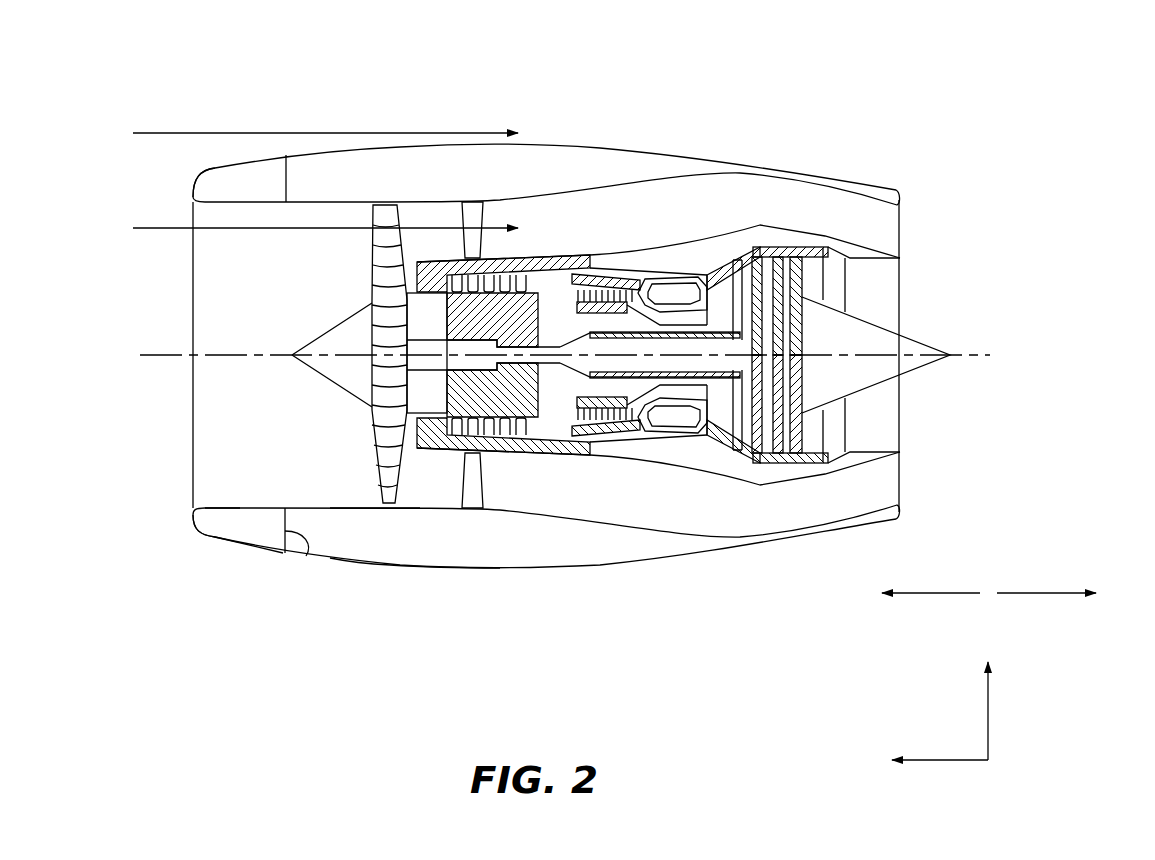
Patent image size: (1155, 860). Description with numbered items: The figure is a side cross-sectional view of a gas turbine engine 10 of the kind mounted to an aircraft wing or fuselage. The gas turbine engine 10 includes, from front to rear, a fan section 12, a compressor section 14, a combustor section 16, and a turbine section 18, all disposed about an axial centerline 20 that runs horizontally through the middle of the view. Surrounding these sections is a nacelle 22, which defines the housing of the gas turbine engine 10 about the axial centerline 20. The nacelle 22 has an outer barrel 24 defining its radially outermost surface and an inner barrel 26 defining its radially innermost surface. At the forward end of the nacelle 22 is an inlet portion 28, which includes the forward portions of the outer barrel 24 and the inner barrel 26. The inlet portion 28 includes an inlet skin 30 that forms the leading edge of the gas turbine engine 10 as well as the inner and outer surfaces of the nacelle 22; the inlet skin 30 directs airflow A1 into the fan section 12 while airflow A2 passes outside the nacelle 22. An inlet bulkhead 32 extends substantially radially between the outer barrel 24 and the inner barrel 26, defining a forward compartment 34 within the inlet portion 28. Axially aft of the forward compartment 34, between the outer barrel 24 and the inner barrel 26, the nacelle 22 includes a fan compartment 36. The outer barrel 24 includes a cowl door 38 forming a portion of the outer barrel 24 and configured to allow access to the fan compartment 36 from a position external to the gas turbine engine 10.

The gas turbine engine 10 is at (910, 138).
The fan section 12 is at (413, 120).
The compressor section 14 is at (413, 120).
The combustor section 16 is at (623, 120).
The turbine section 18 is at (700, 120).
The axial centerline 20 is at (965, 375).
The nacelle 22 is at (608, 580).
The outer barrel 24 is at (392, 566).
The inner barrel 26 is at (313, 507).
The inlet portion 28 is at (183, 528).
The inlet skin 30 is at (215, 547).
The inlet bulkhead 32 is at (306, 558).
The forward compartment 34 is at (265, 537).
The fan compartment 36 is at (388, 543).
The cowl door 38 is at (355, 573).
The airflow A1 is at (161, 227).
The airflow A2 is at (207, 132).